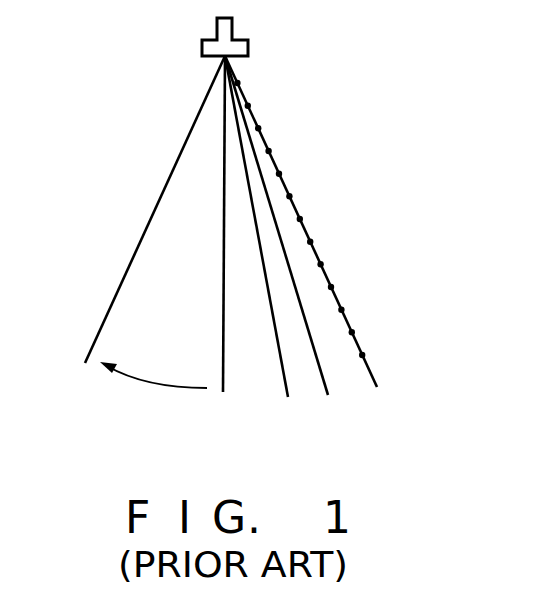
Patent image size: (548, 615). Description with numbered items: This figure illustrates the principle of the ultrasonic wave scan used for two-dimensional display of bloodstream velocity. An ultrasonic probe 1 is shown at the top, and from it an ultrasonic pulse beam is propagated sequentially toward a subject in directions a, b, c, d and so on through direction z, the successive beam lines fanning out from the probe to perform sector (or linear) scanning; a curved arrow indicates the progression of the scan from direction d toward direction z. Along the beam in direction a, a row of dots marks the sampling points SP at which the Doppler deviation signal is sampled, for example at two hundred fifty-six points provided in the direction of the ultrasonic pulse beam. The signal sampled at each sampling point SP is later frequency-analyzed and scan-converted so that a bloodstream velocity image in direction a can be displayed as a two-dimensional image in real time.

The ultrasonic probe 1 is at (232, 26).
The sampling points SP is at (308, 240).
The scan direction z is at (144, 232).
The scan direction d is at (228, 245).
The scan direction c is at (261, 245).
The scan direction b is at (281, 245).
The scan direction a is at (307, 237).